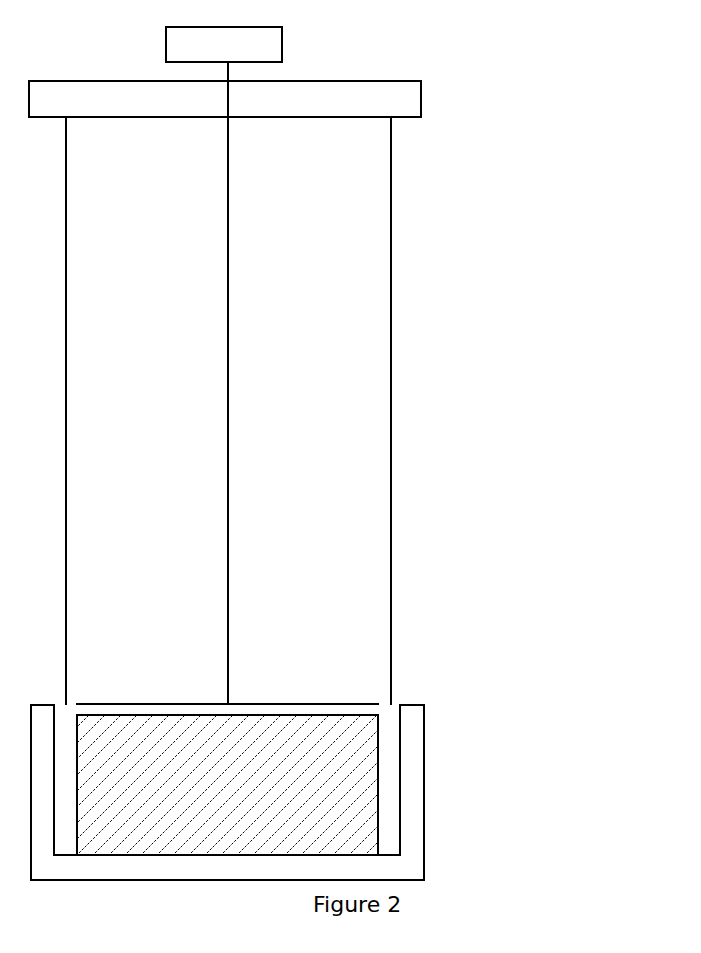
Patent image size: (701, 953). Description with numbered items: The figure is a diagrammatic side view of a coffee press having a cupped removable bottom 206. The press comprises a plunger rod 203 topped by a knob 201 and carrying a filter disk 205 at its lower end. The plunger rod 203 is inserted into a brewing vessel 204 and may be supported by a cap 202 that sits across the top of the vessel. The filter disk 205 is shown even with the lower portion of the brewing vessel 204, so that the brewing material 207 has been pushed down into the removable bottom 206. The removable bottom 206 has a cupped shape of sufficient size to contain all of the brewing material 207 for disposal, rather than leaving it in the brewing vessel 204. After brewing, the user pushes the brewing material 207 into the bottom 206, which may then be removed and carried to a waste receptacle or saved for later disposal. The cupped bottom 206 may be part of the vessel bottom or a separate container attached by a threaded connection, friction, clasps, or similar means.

The knob 201 is at (287, 39).
The cap 202 is at (424, 105).
The plunger rod 203 is at (230, 323).
The brewing vessel 204 is at (393, 394).
The filter disk 205 is at (313, 627).
The cupped removable bottom 206 is at (291, 792).
The brewing material 207 is at (270, 758).